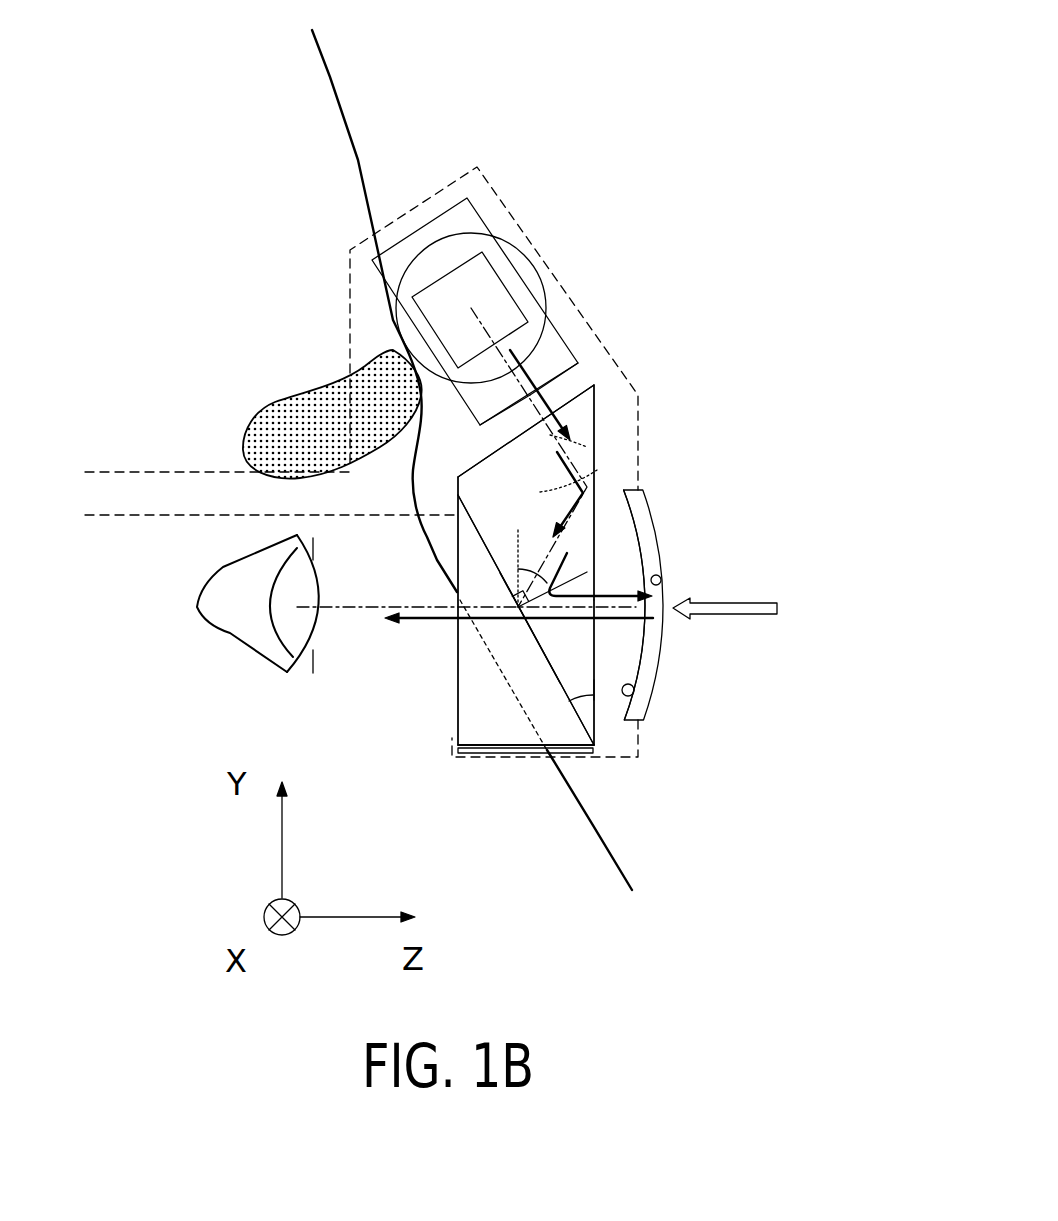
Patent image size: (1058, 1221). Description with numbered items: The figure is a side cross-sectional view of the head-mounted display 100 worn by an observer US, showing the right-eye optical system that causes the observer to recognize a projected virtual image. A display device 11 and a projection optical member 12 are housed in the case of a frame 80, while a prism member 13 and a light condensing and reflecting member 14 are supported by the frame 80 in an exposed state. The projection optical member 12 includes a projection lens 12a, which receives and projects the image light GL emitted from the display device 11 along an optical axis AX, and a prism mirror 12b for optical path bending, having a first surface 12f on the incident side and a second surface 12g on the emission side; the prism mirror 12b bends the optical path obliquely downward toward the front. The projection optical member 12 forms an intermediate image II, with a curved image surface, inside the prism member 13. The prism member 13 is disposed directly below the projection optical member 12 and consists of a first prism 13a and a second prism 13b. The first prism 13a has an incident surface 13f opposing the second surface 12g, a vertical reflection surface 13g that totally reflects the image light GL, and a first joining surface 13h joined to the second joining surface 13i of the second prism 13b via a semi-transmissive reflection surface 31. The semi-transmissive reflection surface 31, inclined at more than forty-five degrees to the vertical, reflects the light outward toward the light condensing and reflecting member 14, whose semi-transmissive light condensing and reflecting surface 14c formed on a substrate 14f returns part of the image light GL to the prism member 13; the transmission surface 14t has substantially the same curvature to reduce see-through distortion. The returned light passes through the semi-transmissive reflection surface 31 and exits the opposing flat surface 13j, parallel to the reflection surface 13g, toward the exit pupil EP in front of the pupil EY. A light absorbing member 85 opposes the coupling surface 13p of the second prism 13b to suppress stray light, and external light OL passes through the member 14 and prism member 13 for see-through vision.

The head-mounted display 100 is at (687, 270).
The display device 11 is at (505, 285).
The projection optical member 12 is at (527, 253).
The projection lens 12a is at (466, 233).
The prism mirror 12b is at (427, 224).
The first surface 12f is at (543, 350).
The second surface 12g is at (530, 395).
The prism member 13 is at (459, 596).
The first prism 13a is at (594, 490).
The second prism 13b is at (530, 753).
The incident surface 13f is at (500, 451).
The reflection surface 13g is at (622, 702).
The first joining surface 13h is at (543, 657).
The second joining surface 13i is at (597, 655).
The opposing flat surface 13j is at (457, 553).
The coupling surface 13p is at (488, 750).
The light condensing and reflecting member 14 is at (657, 545).
The light condensing and reflecting surface 14c is at (662, 590).
The substrate 14f is at (660, 562).
The transmission surface 14t is at (640, 708).
The semi-transmissive reflection surface 31 is at (543, 655).
The frame 80 is at (122, 470).
The light absorbing member 85 is at (505, 753).
The observer US is at (348, 117).
The pupil EY is at (293, 582).
The exit pupil EP is at (315, 560).
The optical axis AX is at (510, 410).
The image light GL is at (555, 405).
The external light OL is at (748, 622).
The intermediate image II is at (597, 477).